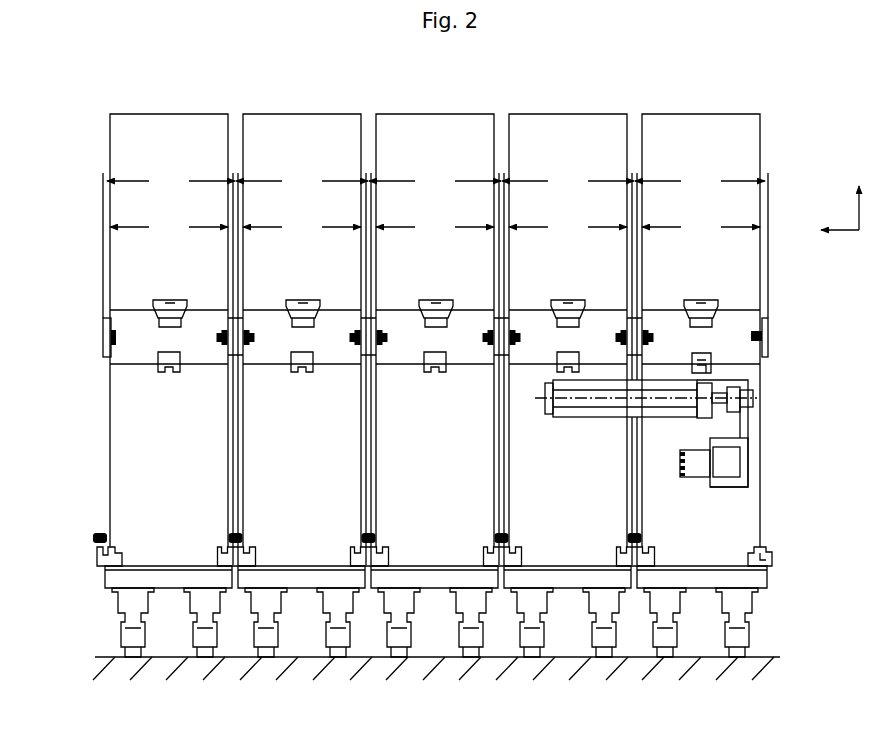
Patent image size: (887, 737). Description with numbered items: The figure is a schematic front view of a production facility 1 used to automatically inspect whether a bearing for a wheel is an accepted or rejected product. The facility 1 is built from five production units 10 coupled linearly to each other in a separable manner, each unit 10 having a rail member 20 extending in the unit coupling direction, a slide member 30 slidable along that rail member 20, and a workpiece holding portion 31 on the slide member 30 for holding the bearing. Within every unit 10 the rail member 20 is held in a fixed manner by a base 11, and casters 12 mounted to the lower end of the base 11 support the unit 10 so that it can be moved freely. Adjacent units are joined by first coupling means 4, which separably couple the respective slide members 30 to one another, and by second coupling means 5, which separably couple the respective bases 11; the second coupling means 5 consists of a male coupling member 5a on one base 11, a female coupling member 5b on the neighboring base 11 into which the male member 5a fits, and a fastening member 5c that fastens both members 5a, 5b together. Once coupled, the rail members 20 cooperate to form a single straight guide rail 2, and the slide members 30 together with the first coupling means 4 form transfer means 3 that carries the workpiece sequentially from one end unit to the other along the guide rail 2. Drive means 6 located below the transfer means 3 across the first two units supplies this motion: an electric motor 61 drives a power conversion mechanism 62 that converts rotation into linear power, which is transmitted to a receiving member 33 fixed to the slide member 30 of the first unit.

The production facility 1 is at (788, 129).
The guide rail 2 is at (773, 338).
The transfer means 3 is at (132, 325).
The first coupling means 4 is at (221, 351).
The second coupling means 5 is at (217, 541).
The male coupling member 5a is at (97, 553).
The female coupling member 5b is at (618, 562).
The fastening member 5c is at (100, 532).
The drive means 6 is at (676, 420).
The production unit 10 is at (165, 112).
The base 11 is at (157, 492).
The casters 12 is at (197, 636).
The rail member 20 is at (104, 349).
The slide member 30 is at (145, 347).
The workpiece holding portion 31 is at (165, 305).
The receiving member 33 is at (705, 348).
The electric motor 61 is at (738, 461).
The power conversion mechanism 62 is at (757, 419).